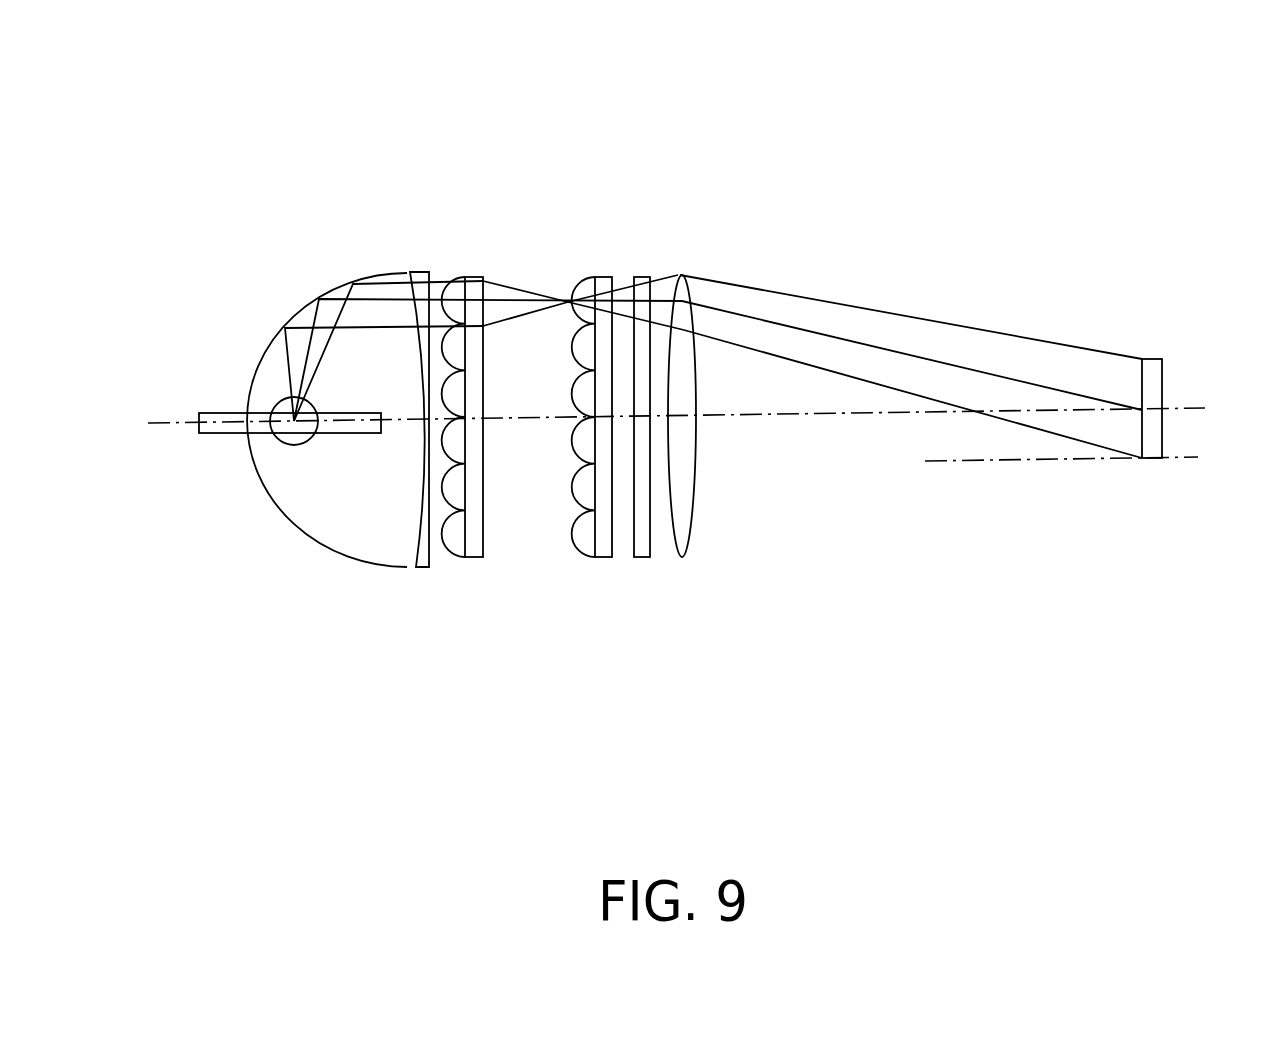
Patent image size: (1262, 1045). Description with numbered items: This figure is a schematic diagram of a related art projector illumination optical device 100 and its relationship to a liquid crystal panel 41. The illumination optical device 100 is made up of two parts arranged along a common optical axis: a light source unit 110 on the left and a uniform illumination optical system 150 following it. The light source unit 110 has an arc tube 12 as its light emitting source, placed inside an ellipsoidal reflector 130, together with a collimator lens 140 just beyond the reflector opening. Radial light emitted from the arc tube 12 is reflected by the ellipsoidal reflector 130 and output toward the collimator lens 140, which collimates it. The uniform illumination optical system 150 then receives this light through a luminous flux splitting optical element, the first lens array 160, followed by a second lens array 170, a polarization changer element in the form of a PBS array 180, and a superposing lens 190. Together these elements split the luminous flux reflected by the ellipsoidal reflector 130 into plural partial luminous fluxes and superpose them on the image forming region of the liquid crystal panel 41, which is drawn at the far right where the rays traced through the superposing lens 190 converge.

The illumination optical device 100 is at (567, 166).
The light source unit 110 is at (297, 638).
The arc tube 12 is at (342, 433).
The ellipsoidal reflector 130 is at (316, 566).
The collimator lens 140 is at (423, 567).
The uniform illumination optical system 150 is at (762, 638).
The first lens array 160 is at (475, 557).
The second lens array 170 is at (602, 557).
The PBS array 180 is at (642, 557).
The superposing lens 190 is at (700, 550).
The liquid crystal panel 41 is at (1162, 370).